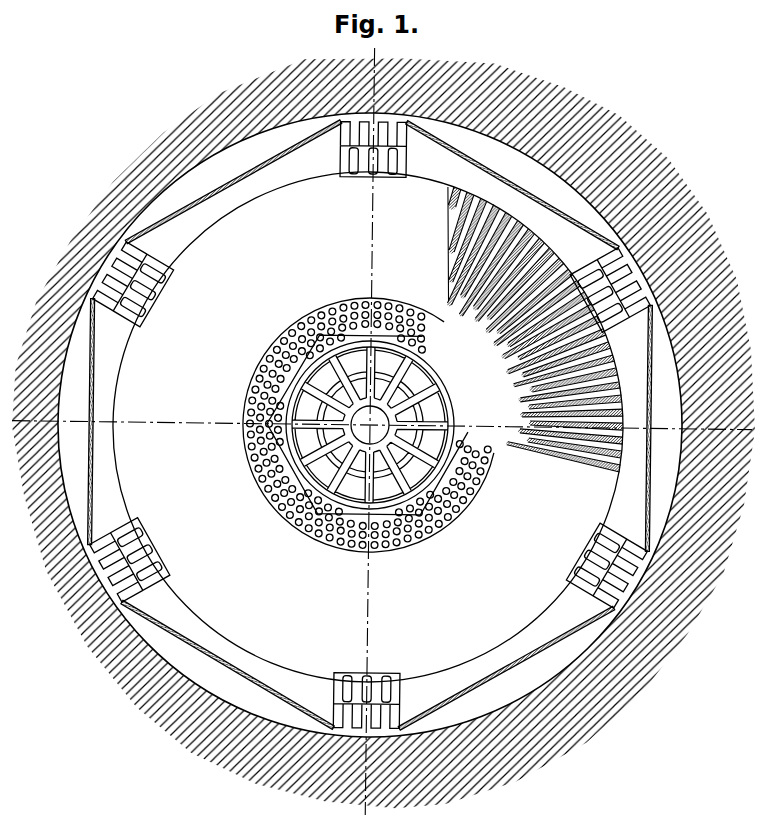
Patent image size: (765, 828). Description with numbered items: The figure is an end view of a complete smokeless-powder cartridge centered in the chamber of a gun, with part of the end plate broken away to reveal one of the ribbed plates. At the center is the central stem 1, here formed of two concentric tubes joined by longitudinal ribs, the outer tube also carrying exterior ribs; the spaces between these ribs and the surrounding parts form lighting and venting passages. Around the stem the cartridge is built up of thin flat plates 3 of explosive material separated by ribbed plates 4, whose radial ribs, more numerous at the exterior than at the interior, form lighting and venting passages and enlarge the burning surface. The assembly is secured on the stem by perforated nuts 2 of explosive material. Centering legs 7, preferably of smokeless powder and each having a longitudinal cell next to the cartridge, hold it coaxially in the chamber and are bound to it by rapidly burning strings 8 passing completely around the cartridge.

The central stem 1 is at (371, 472).
The nuts 2 is at (322, 541).
The thin flat plates 3 is at (368, 427).
The ribbed plates 4 is at (605, 363).
The centering legs 7 is at (588, 600).
The strings 8 is at (640, 388).